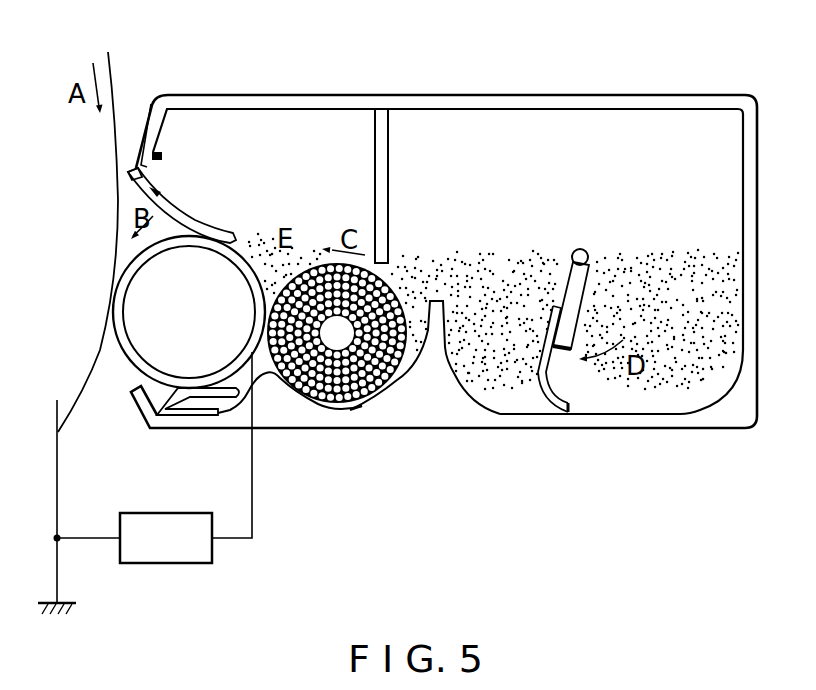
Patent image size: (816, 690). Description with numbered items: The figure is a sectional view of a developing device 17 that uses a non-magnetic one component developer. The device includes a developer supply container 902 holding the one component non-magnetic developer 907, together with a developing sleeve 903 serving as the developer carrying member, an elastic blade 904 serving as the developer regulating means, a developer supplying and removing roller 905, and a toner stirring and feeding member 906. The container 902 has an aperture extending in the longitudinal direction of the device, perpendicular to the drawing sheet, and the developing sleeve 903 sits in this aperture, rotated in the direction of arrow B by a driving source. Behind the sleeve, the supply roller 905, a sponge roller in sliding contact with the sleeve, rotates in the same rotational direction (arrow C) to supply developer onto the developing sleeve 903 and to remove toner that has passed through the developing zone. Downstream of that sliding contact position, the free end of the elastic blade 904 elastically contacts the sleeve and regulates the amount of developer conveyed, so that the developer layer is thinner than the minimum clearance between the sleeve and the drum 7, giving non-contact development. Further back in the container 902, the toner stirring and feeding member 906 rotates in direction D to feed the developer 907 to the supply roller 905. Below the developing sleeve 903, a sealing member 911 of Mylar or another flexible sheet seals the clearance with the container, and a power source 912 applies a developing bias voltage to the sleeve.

The drum 7 is at (112, 82).
The developing device 17 is at (623, 86).
The developer supply container 902 is at (458, 414).
The developing sleeve 903 is at (128, 363).
The elastic blade 904 is at (207, 228).
The developer supplying and removing roller 905 is at (362, 408).
The toner stirring and feeding member 906 is at (586, 372).
The one component non-magnetic developer 907 is at (681, 345).
The sealing member 911 is at (190, 408).
The power source 912 is at (188, 563).